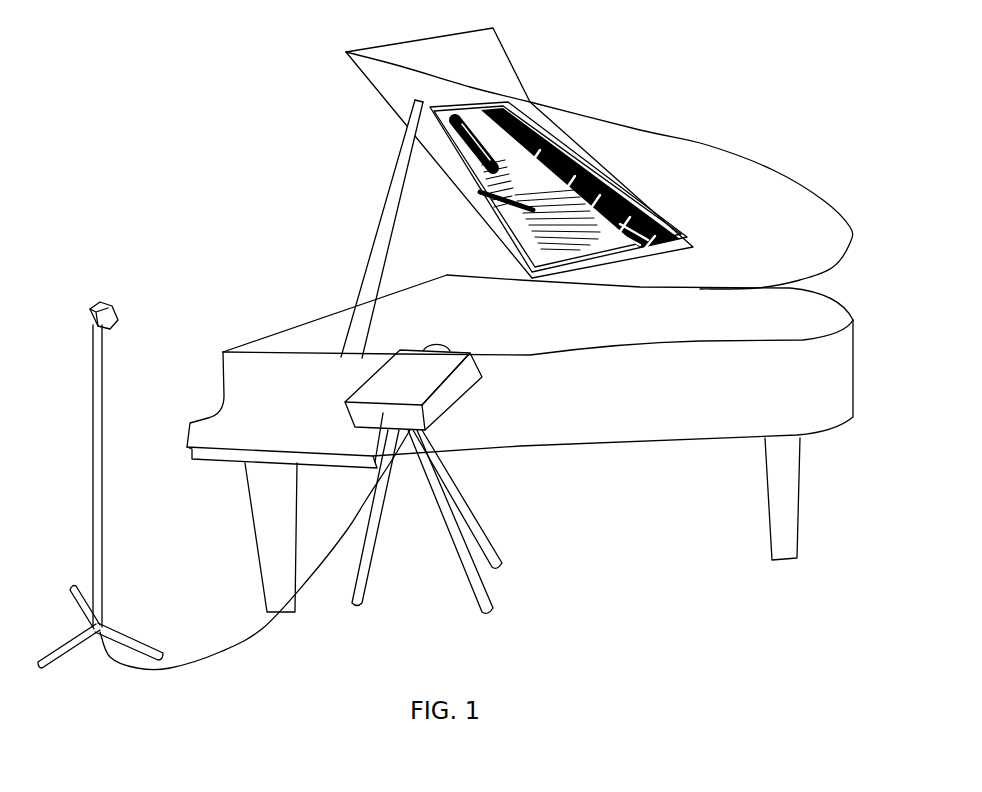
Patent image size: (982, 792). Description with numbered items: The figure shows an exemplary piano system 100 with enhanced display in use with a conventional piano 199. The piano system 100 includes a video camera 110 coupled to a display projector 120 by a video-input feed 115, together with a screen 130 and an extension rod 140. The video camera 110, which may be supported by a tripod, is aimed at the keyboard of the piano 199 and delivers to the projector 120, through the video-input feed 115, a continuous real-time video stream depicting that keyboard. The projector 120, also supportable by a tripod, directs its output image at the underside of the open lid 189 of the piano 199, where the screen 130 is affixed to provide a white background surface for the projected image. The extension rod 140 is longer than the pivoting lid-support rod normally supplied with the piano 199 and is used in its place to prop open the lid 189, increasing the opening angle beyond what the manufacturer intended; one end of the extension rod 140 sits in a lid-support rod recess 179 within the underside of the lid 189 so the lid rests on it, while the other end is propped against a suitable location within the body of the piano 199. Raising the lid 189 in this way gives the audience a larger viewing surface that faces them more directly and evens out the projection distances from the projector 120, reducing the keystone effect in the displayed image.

The piano system 100 is at (124, 62).
The video camera 110 is at (92, 312).
The video-input feed 115 is at (263, 628).
The display projector 120 is at (450, 385).
The screen 130 is at (683, 245).
The extension rod 140 is at (372, 272).
The lid-support rod recess 179 is at (415, 100).
The lid 189 is at (633, 150).
The piano 199 is at (306, 300).